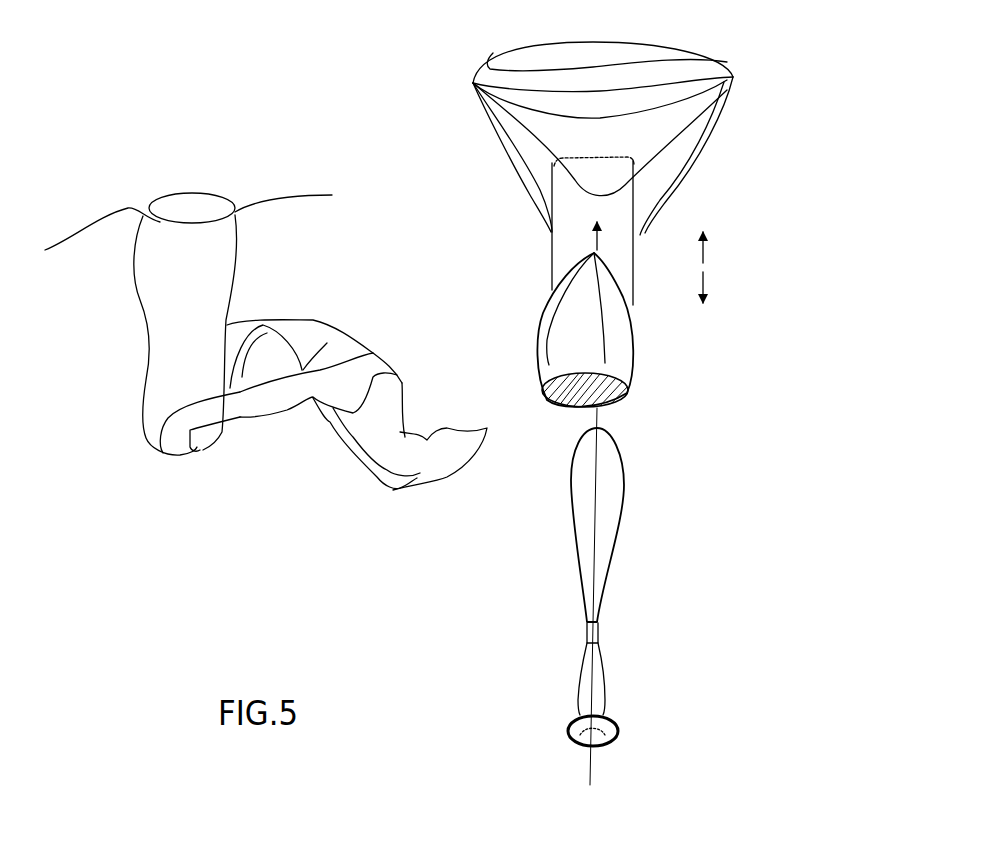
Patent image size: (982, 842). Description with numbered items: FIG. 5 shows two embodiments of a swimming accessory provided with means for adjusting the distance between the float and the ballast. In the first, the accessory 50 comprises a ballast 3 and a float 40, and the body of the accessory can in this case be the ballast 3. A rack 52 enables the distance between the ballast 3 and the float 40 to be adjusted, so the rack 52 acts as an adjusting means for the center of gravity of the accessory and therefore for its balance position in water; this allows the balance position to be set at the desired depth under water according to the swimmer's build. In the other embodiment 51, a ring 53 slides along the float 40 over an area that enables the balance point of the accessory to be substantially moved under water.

The ballast 3 is at (198, 446).
The float 40 is at (153, 237).
The accessory 50 is at (789, 176).
The another embodiment 51 is at (714, 525).
The rack 52 is at (548, 258).
The ring 53 is at (600, 636).